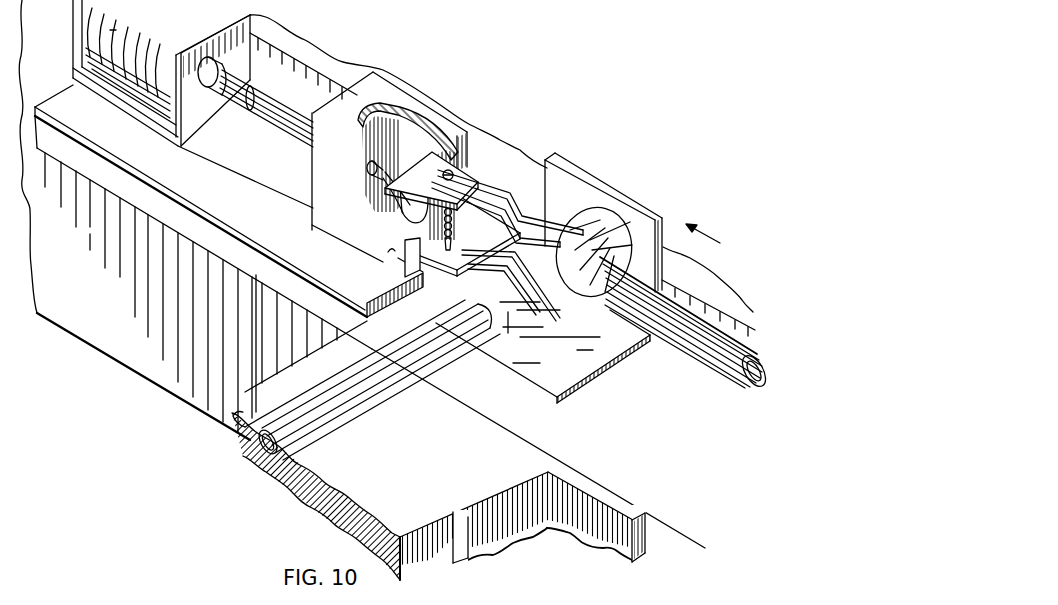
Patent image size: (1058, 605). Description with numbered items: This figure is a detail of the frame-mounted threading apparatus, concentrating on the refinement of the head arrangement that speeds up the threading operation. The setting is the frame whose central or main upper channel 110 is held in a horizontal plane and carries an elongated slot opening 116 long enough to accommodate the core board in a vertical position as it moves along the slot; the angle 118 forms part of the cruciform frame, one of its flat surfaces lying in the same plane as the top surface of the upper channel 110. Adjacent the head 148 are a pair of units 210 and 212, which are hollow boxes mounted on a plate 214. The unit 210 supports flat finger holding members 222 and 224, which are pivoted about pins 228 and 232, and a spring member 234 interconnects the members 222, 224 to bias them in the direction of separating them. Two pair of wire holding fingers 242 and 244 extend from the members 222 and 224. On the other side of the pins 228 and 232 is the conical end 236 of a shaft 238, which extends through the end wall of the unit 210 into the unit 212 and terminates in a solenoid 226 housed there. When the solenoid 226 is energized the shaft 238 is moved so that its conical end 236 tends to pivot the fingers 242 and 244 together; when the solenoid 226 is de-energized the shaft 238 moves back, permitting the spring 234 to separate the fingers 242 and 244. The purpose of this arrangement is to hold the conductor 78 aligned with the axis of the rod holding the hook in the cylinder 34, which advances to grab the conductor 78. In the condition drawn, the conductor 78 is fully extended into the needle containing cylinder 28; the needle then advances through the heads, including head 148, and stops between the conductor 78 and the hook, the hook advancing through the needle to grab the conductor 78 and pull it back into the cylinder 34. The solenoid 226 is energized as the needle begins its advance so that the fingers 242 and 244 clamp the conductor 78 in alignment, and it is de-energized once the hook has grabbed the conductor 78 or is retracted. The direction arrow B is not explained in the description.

The needle containing cylinder 28 is at (354, 407).
The cylinder 34 is at (698, 360).
The conductor 78 is at (548, 332).
The central or main upper channel 110 is at (342, 62).
The elongated slot opening 116 is at (280, 47).
The angle 118 is at (307, 527).
The head 148 is at (613, 183).
The unit 210 is at (322, 227).
The unit 212 is at (152, 133).
The plate 214 is at (372, 313).
The flat finger holding member 222 is at (517, 173).
The flat finger holding member 224 is at (450, 277).
The solenoid 226 is at (120, 73).
The pin 228 is at (370, 215).
The pin 232 is at (388, 250).
The spring member 234 is at (400, 245).
The conical end 236 is at (432, 130).
The shaft 238 is at (278, 122).
The wire holding finger 242 is at (528, 200).
The wire holding finger 244 is at (570, 307).
The direction arrow B is at (710, 240).